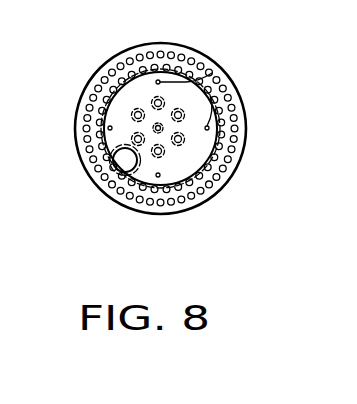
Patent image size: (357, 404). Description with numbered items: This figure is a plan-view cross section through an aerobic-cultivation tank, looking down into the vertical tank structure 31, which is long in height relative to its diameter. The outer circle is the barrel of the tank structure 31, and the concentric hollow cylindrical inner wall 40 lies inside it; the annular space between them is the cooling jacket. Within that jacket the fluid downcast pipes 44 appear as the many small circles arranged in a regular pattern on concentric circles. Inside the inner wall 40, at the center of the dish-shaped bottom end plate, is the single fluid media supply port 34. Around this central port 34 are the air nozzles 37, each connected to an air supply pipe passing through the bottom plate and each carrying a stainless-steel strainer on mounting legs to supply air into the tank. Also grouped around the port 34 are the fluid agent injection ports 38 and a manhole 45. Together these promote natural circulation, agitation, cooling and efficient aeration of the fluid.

The vertical tank structure 31 is at (78, 104).
The hollow cylindrical inner wall 40 is at (112, 93).
The fluid downcast pipes 44 is at (129, 53).
The fluid agent injection ports 38 is at (210, 95).
The air nozzles 37 is at (178, 139).
The fluid media supply port 34 is at (155, 129).
The manhole 45 is at (125, 167).